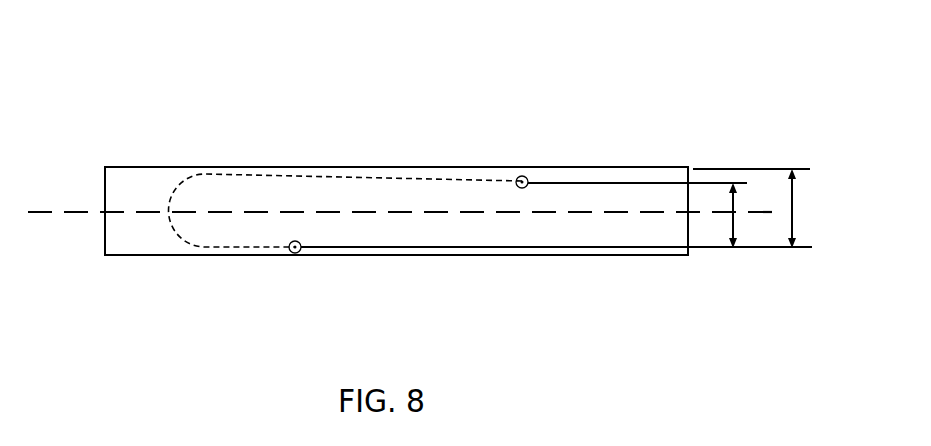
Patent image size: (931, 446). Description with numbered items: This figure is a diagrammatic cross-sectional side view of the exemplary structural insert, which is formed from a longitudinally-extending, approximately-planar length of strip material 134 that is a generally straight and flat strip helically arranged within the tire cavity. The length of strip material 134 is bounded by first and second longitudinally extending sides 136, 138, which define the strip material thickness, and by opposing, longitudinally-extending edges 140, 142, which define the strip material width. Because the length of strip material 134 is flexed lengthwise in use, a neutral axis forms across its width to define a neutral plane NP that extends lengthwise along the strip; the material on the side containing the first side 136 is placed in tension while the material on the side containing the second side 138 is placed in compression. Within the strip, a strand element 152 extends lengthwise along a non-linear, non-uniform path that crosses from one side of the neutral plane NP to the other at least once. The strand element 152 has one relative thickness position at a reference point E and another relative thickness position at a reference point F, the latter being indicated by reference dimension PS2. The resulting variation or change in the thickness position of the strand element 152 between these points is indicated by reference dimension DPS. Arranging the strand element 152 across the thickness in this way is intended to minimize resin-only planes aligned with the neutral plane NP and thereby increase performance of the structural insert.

The length of strip material 134 is at (208, 116).
The first longitudinally extending side 136 is at (153, 166).
The second longitudinally extending side 138 is at (167, 256).
The longitudinally-extending edge 140 is at (105, 232).
The longitudinally-extending edge 142 is at (688, 233).
The strand element 152 is at (287, 253).
The neutral plane NP is at (60, 212).
The reference point E is at (527, 175).
The reference point F is at (300, 254).
The reference dimension DPS is at (735, 210).
The reference dimension PS2 is at (795, 206).